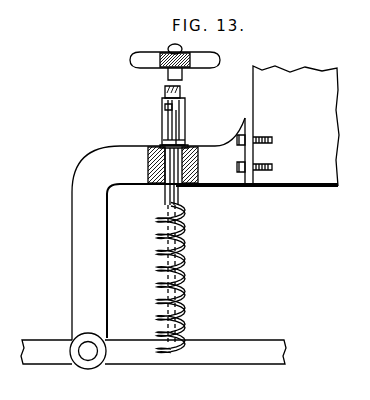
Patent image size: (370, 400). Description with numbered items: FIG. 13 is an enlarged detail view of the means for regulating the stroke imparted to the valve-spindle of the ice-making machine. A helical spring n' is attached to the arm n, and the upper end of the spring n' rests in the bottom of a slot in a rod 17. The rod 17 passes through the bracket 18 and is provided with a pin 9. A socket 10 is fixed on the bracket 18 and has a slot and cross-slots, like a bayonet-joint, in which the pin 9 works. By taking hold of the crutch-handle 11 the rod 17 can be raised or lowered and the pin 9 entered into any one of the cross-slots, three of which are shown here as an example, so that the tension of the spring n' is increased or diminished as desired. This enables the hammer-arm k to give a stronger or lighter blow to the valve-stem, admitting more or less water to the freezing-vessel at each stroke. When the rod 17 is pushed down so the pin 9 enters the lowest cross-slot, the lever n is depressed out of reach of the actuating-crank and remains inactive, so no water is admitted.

The crutch-handle 11 is at (137, 66).
The pin 9 is at (163, 110).
The socket 10 is at (192, 132).
The bracket 18 is at (184, 165).
The rod 17 is at (184, 196).
The helical spring n' is at (182, 278).
The arm n is at (195, 342).
The hammer-arm k is at (63, 351).